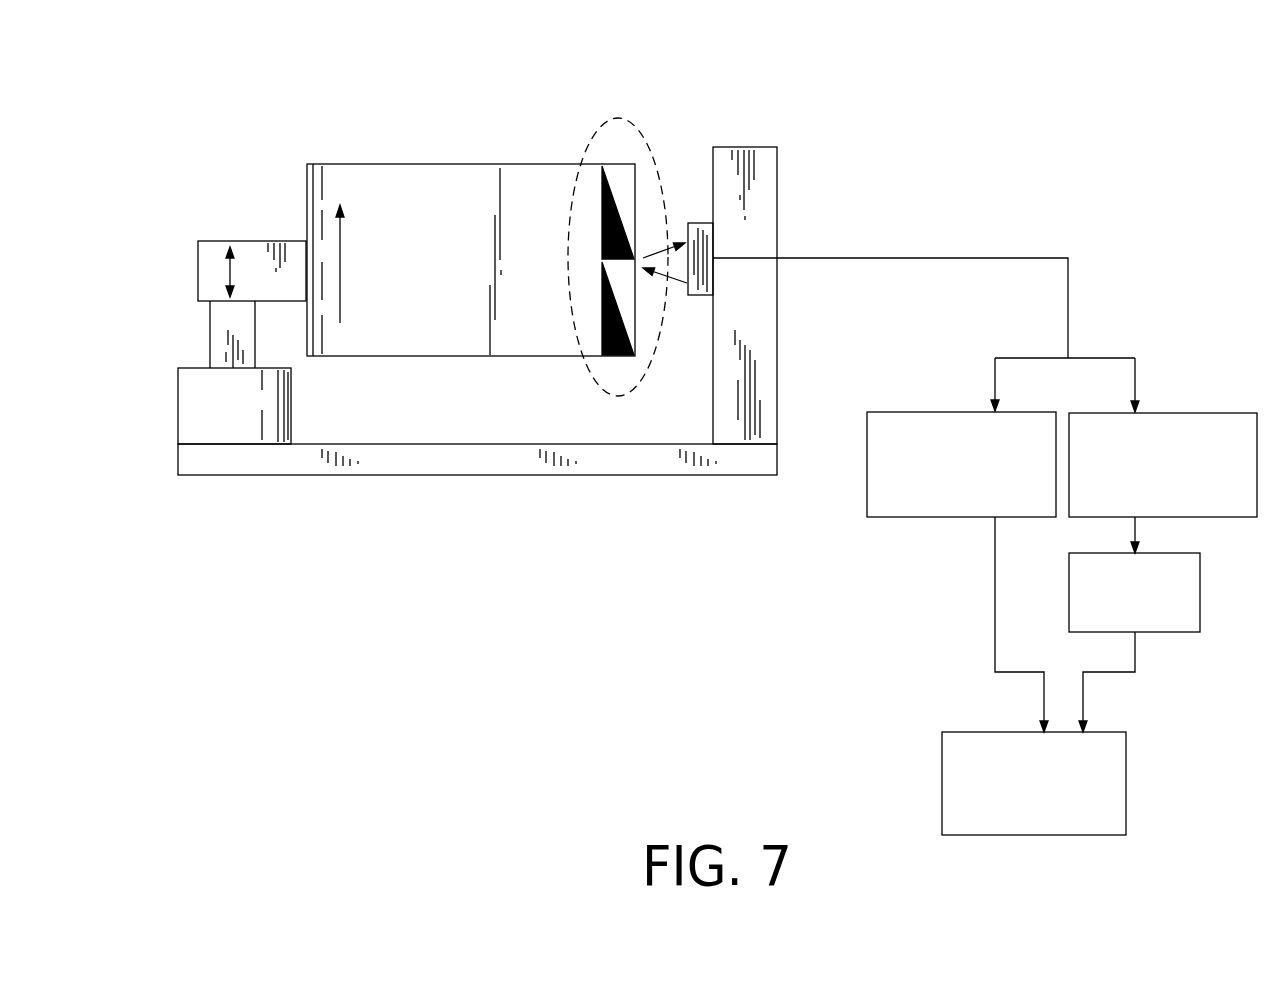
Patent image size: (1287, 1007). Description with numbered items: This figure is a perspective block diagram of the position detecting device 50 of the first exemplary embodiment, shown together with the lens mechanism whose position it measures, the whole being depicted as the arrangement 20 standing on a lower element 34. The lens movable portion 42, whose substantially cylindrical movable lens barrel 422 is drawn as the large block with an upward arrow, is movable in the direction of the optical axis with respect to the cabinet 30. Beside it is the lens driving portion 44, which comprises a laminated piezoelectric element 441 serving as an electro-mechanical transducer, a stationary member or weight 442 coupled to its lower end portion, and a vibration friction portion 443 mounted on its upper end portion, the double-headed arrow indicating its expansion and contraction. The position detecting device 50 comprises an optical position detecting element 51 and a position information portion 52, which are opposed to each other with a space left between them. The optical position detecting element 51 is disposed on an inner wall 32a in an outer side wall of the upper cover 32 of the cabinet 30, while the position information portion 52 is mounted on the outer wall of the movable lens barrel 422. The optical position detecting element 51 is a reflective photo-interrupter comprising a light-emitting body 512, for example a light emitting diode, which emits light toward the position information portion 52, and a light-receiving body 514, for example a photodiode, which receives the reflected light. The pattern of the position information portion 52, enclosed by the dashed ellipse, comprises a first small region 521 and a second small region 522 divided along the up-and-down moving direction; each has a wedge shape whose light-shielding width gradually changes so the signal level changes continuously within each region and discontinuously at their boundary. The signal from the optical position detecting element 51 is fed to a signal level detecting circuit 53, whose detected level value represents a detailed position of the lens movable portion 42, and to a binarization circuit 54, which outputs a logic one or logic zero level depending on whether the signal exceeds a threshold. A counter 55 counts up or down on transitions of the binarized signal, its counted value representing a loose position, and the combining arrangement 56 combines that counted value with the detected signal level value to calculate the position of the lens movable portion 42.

The mark detecting apparatus 20 is at (262, 146).
The cabinet 30 is at (779, 245).
The upper cover 32 is at (779, 245).
The inner wall 32a is at (705, 217).
The base 34 is at (500, 462).
The lens movable portion 42 is at (466, 308).
The movable lens barrel 422 is at (390, 321).
The lens driving portion 44 is at (199, 305).
The laminated piezoelectric element 441 is at (210, 337).
The stationary member 442 is at (178, 413).
The vibration friction portion 443 is at (197, 263).
The position detecting device 50 is at (993, 546).
The optical position detecting element 51 is at (752, 258).
The light-emitting body 512 is at (698, 296).
The light-receiving body 514 is at (700, 222).
The position information portion 52 is at (575, 322).
The first small region 521 is at (602, 316).
The second small region 522 is at (601, 207).
The signal level detecting circuit 53 is at (938, 411).
The binarization circuit 54 is at (1160, 413).
The counter 55 is at (1201, 588).
The combining arrangement 56 is at (1127, 748).